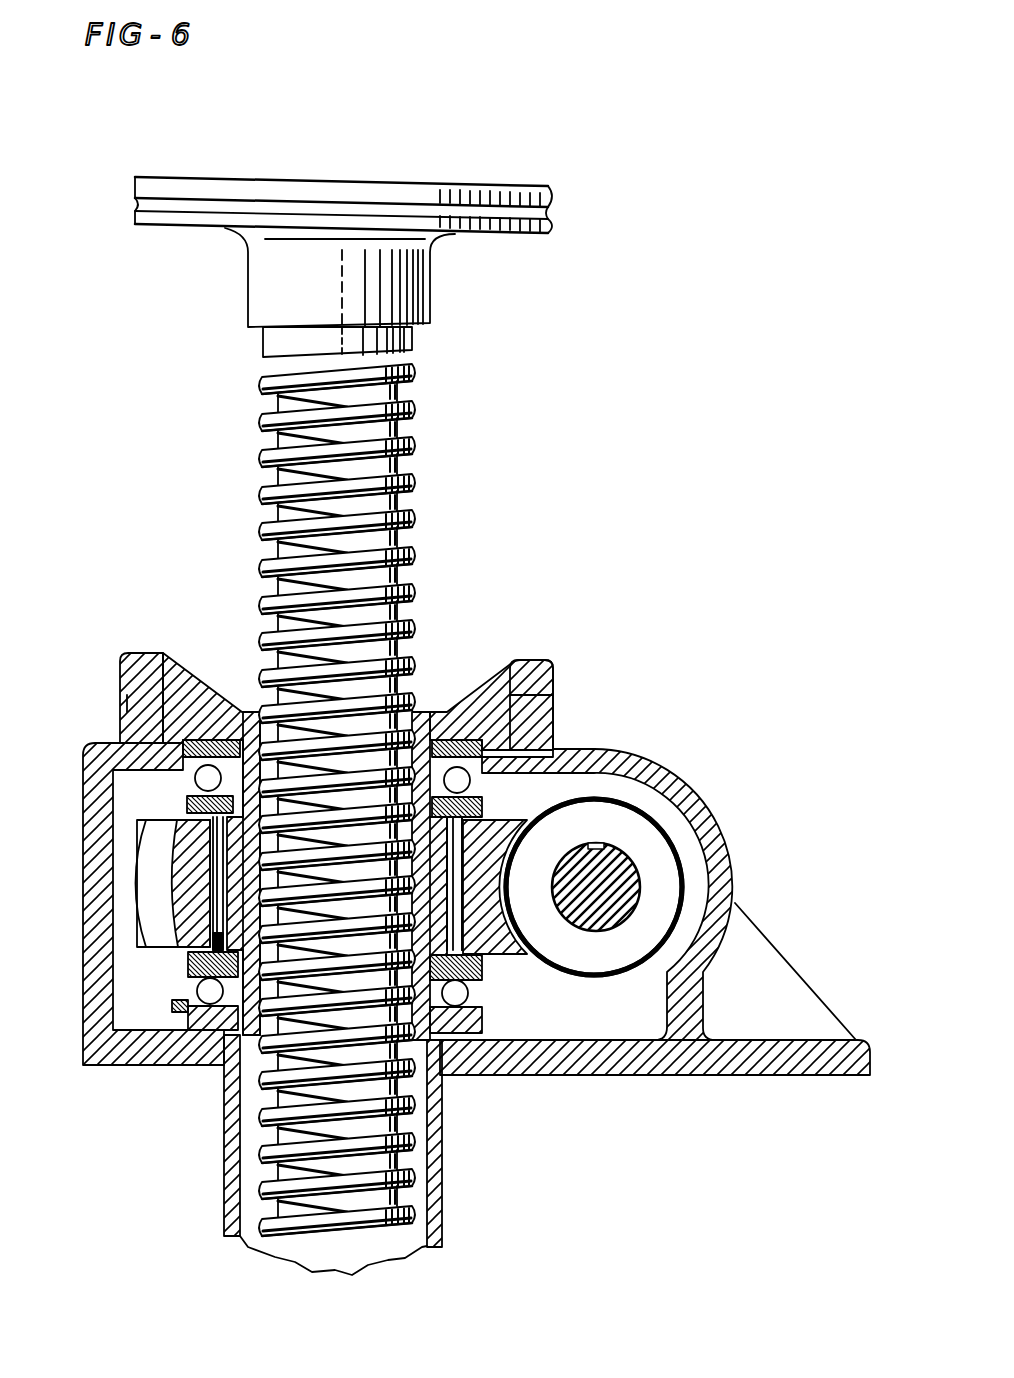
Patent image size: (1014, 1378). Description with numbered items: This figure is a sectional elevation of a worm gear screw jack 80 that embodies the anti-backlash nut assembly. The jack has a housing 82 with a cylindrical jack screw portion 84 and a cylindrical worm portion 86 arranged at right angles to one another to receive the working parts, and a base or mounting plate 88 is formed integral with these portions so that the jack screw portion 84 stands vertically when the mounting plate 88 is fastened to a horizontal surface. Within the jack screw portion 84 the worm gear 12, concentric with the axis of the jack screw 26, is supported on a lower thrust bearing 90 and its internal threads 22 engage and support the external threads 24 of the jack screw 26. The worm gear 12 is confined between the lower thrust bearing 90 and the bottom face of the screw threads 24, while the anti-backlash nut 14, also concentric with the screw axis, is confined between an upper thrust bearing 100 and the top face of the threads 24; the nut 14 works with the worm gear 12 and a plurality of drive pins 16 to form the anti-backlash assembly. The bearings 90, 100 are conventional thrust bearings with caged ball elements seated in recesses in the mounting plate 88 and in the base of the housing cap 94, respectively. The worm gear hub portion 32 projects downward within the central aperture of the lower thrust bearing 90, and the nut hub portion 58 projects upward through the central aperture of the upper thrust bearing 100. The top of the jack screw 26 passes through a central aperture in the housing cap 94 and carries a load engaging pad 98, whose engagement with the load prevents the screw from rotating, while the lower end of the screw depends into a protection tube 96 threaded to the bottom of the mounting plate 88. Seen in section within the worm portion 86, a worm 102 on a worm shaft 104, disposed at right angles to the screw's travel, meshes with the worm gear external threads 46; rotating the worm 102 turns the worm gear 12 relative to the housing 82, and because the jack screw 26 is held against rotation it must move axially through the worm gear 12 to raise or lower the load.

The worm gear 12 is at (496, 937).
The anti-backlash nut 14 is at (413, 718).
The drive pins 16 is at (490, 850).
The internal threads 22 is at (408, 910).
The external threads 24 is at (383, 781).
The jack screw 26 is at (405, 438).
The worm gear hub portion 32 is at (187, 1000).
The worm gear external threads 46 is at (528, 821).
The nut hub portion 58 is at (243, 712).
The worm gear screw jack 80 is at (449, 883).
The housing 82 is at (83, 748).
The cylindrical jack screw portion 84 is at (80, 838).
The cylindrical worm portion 86 is at (675, 780).
The mounting plate 88 is at (655, 923).
The lower thrust bearing 90 is at (187, 960).
The housing cap 94 is at (540, 664).
The protection tube 96 is at (225, 1188).
The load engaging pad 98 is at (512, 228).
The upper thrust bearing 100 is at (187, 797).
The worm 102 is at (585, 952).
The worm shaft 104 is at (612, 912).